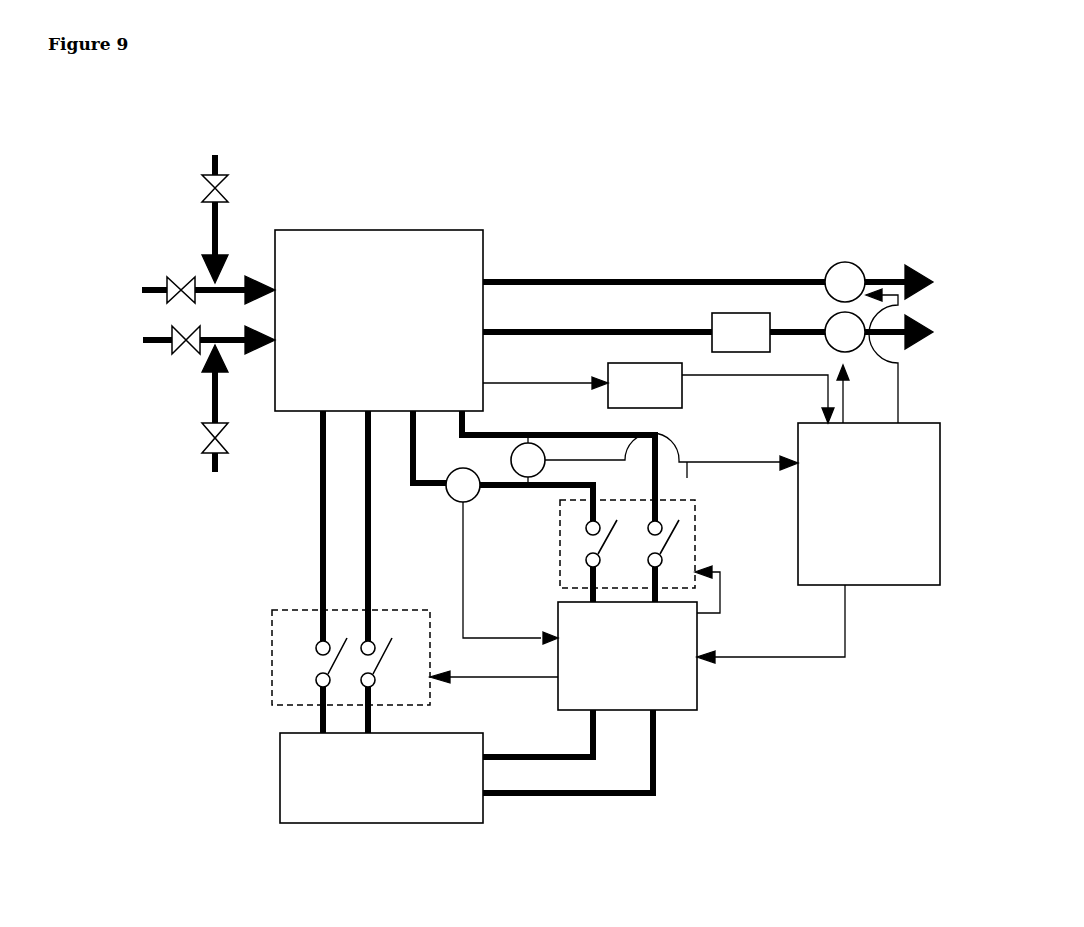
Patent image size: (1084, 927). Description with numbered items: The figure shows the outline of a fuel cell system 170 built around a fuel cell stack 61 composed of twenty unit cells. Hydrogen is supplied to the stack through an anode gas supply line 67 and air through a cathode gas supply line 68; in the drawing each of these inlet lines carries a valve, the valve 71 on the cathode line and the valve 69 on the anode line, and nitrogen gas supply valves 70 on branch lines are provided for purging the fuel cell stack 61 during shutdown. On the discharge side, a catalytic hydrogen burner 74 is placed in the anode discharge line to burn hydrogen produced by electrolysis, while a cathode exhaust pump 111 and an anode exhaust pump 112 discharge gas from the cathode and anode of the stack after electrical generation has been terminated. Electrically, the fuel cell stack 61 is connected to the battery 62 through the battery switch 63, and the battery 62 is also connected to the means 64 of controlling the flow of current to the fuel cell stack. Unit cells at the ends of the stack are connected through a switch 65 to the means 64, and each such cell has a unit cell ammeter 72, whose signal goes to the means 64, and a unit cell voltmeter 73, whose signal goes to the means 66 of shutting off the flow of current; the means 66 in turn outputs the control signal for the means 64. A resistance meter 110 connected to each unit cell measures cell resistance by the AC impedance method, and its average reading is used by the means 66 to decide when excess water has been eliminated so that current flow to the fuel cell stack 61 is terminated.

The fuel cell stack 61 is at (362, 217).
The battery 62 is at (365, 844).
The battery switch 63 is at (259, 653).
The means of controlling the flow of current to the fuel cell stack 64 is at (698, 727).
The switch 65 is at (689, 466).
The means of shutting off the flow of current to the fuel cell stack 66 is at (908, 604).
The anode gas supply line 67 is at (148, 359).
The cathode gas supply line 68 is at (130, 274).
The oxidant supply valve 69 is at (183, 369).
The nitrogen gas supply valves 70 is at (234, 178).
The fuel supply valve 71 is at (165, 262).
The unit cell ammeter 72 is at (471, 444).
The unit cell voltmeter 73 is at (540, 419).
The catalytic hydrogen burner 74 is at (741, 296).
The resistance meter 110 is at (632, 346).
The cathode exhaust pump 111 is at (847, 249).
The anode exhaust pump 112 is at (813, 306).
The fuel cell system 170 is at (752, 158).